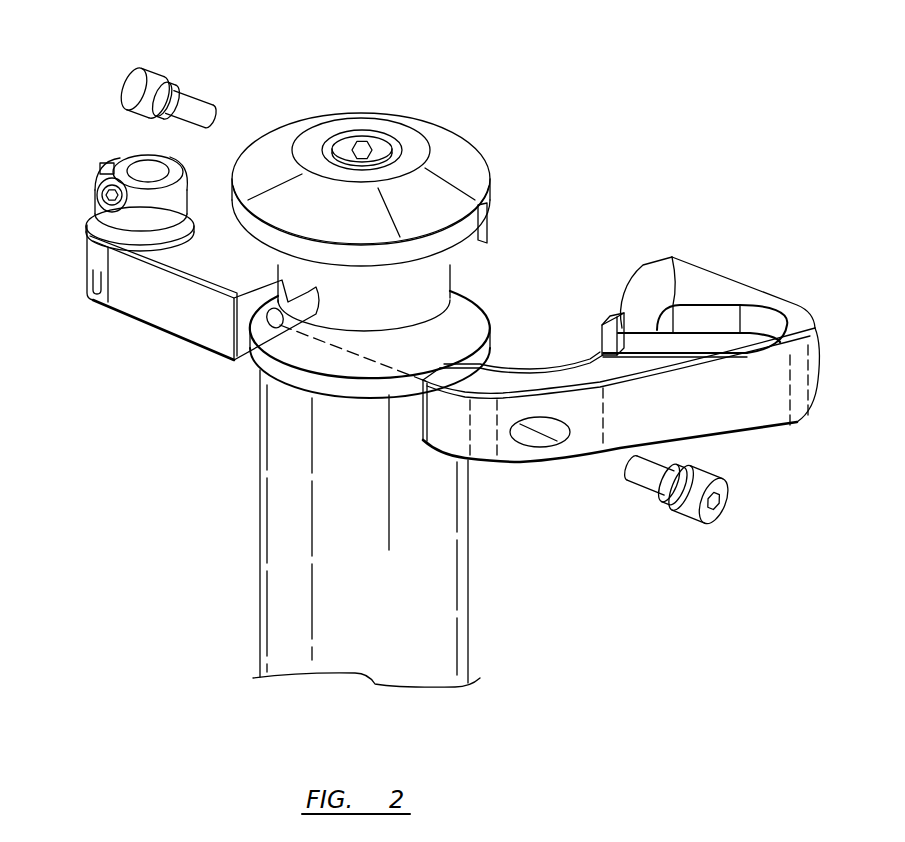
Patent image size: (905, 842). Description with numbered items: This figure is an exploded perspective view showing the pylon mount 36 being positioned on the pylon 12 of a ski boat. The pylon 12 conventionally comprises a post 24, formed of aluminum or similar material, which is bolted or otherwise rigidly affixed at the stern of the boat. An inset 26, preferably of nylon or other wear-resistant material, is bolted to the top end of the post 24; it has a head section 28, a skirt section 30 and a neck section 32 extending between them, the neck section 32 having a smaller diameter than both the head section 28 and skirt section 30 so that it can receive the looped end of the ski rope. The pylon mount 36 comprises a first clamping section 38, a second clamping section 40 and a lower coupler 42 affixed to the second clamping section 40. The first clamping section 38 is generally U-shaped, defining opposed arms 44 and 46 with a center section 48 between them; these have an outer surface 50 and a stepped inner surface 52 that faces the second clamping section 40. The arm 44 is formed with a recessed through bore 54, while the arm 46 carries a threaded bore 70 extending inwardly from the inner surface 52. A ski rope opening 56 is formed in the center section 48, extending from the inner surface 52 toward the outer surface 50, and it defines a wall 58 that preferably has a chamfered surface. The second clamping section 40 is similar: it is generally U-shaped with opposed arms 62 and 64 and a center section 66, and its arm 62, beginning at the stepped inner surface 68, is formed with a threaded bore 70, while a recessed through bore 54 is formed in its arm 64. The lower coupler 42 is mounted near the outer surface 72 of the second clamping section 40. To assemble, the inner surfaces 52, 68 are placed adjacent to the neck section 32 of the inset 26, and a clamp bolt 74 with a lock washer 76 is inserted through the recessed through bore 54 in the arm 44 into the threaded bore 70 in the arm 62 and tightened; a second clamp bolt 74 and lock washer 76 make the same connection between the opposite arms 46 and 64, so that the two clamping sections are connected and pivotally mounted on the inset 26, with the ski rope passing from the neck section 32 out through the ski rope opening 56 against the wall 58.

The pylon 12 is at (205, 636).
The post 24 is at (260, 560).
The inset 26 is at (495, 95).
The head section 28 is at (438, 125).
The skirt section 30 is at (465, 307).
The neck section 32 is at (442, 282).
The pylon mount 36 is at (720, 252).
The first clamping section 38 is at (770, 436).
The second clamping section 40 is at (236, 132).
The lower coupler 42 is at (105, 144).
The arm 44 is at (490, 382).
The arm 46 is at (673, 262).
The center section 48 is at (803, 330).
The outer surface 50 is at (808, 388).
The inner surface 52 is at (625, 308).
The recessed through bore 54 is at (540, 440).
The ski rope opening 56 is at (708, 342).
The wall 58 is at (754, 320).
The arm 62 is at (197, 265).
The arm 64 is at (487, 233).
The center section 66 is at (91, 217).
The inner surface 68 is at (272, 352).
The threaded bore 70 is at (268, 320).
The outer surface 72 is at (97, 290).
The clamp bolt 74 is at (200, 96).
The lock washer 76 is at (181, 86).